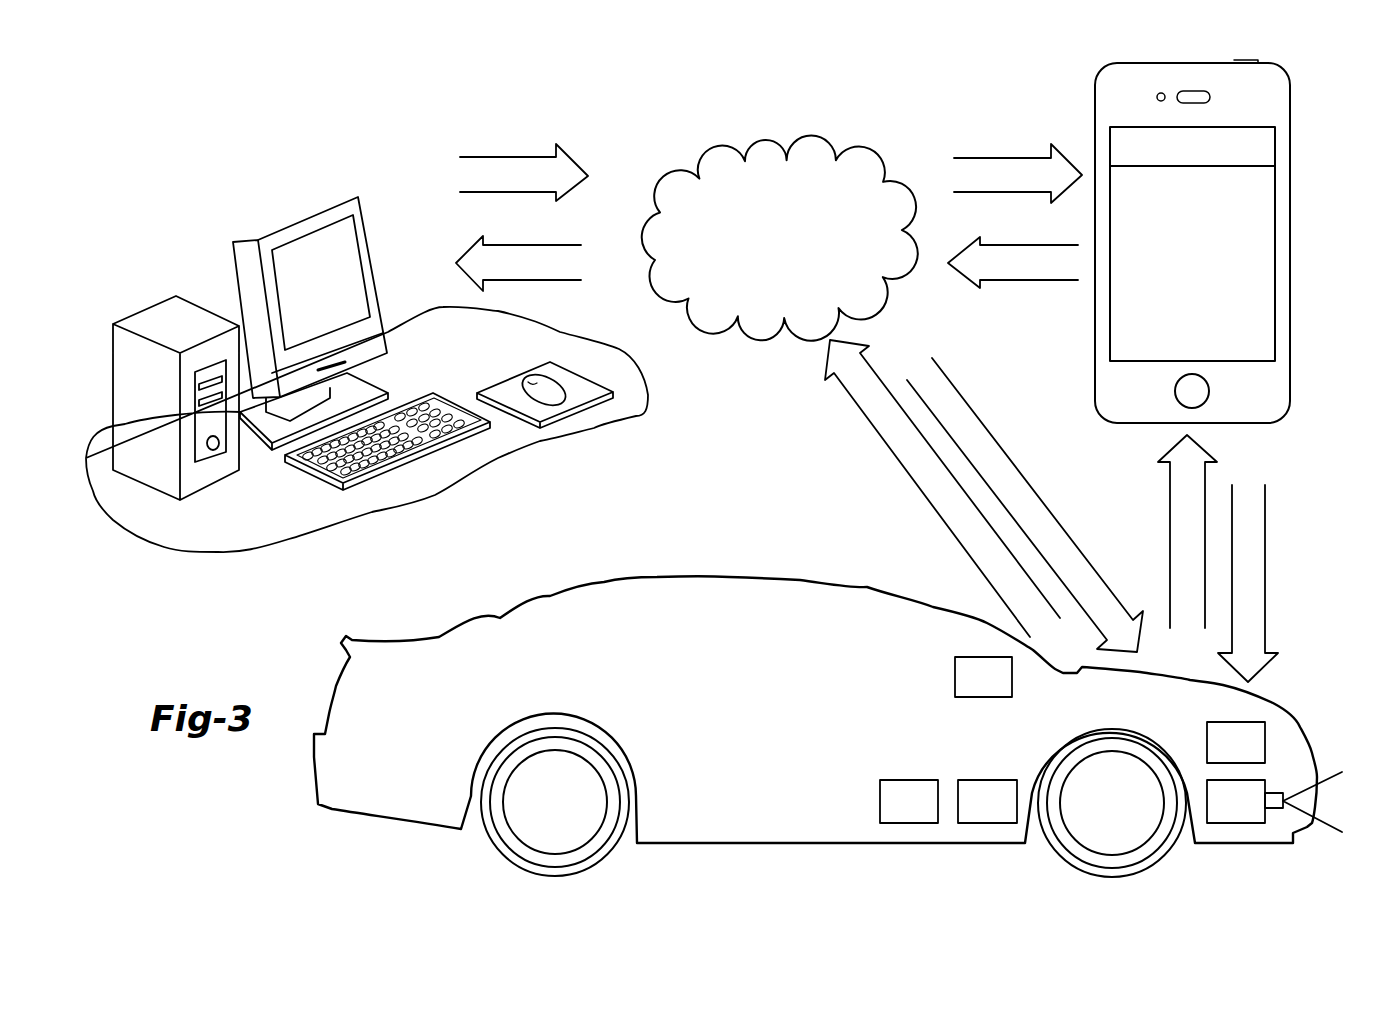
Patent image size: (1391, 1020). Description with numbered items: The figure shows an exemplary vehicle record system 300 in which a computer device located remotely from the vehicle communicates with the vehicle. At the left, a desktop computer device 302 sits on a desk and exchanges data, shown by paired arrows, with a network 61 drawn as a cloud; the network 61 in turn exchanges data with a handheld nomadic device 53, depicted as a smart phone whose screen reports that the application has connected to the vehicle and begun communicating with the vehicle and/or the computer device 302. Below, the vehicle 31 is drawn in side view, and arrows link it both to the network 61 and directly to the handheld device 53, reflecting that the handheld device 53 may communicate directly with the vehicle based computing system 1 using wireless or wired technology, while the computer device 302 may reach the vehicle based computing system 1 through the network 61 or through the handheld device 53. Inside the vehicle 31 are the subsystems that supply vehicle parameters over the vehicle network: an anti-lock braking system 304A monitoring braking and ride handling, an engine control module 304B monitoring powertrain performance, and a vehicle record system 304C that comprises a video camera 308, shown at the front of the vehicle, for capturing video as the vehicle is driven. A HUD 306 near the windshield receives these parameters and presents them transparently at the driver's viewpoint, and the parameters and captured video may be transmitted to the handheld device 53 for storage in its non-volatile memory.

The vehicle record system 300 is at (388, 108).
The computer device 302 is at (287, 220).
The network 61 is at (759, 273).
The nomadic device 53 is at (1096, 103).
The vehicle 31 is at (675, 573).
The HUD 306 is at (955, 676).
The anti-lock braking system 304A is at (880, 803).
The engine control module 304B is at (987, 823).
The vehicle record system 304C is at (1233, 823).
The vehicle based computing system 1 is at (1207, 742).
The video camera 308 is at (1272, 813).